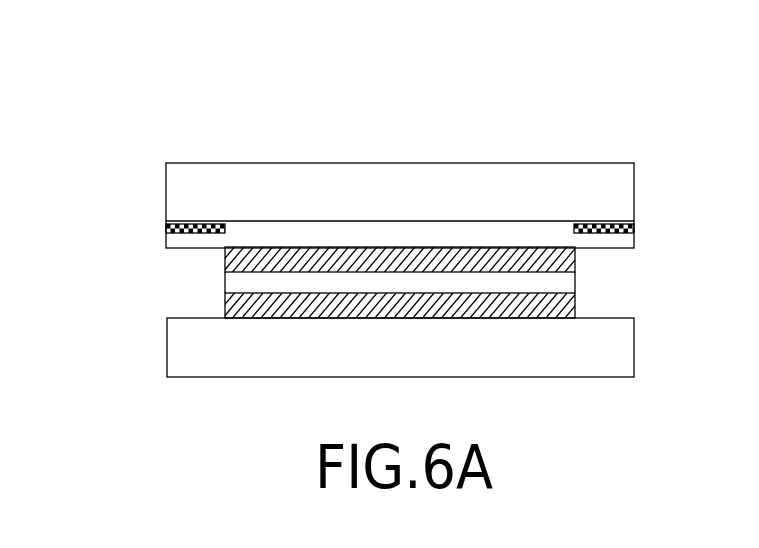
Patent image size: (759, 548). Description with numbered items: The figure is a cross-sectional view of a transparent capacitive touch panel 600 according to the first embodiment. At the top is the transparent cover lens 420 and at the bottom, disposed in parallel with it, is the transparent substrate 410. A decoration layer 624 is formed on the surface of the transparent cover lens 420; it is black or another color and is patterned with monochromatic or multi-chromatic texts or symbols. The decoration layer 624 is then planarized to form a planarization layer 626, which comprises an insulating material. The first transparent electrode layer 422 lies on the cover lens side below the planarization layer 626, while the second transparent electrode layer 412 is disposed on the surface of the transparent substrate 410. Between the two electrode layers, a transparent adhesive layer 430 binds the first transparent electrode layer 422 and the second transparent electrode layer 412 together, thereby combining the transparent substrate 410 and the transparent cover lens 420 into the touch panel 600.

The transparent cover lens 420 is at (610, 173).
The decoration layer 624 is at (166, 229).
The planarization layer 626 is at (605, 240).
The first transparent electrode layer 422 is at (575, 260).
The transparent adhesive layer 430 is at (240, 281).
The second transparent electrode layer 412 is at (575, 299).
The transparent substrate 410 is at (612, 355).
The transparent capacitive touch panel 600 is at (652, 511).